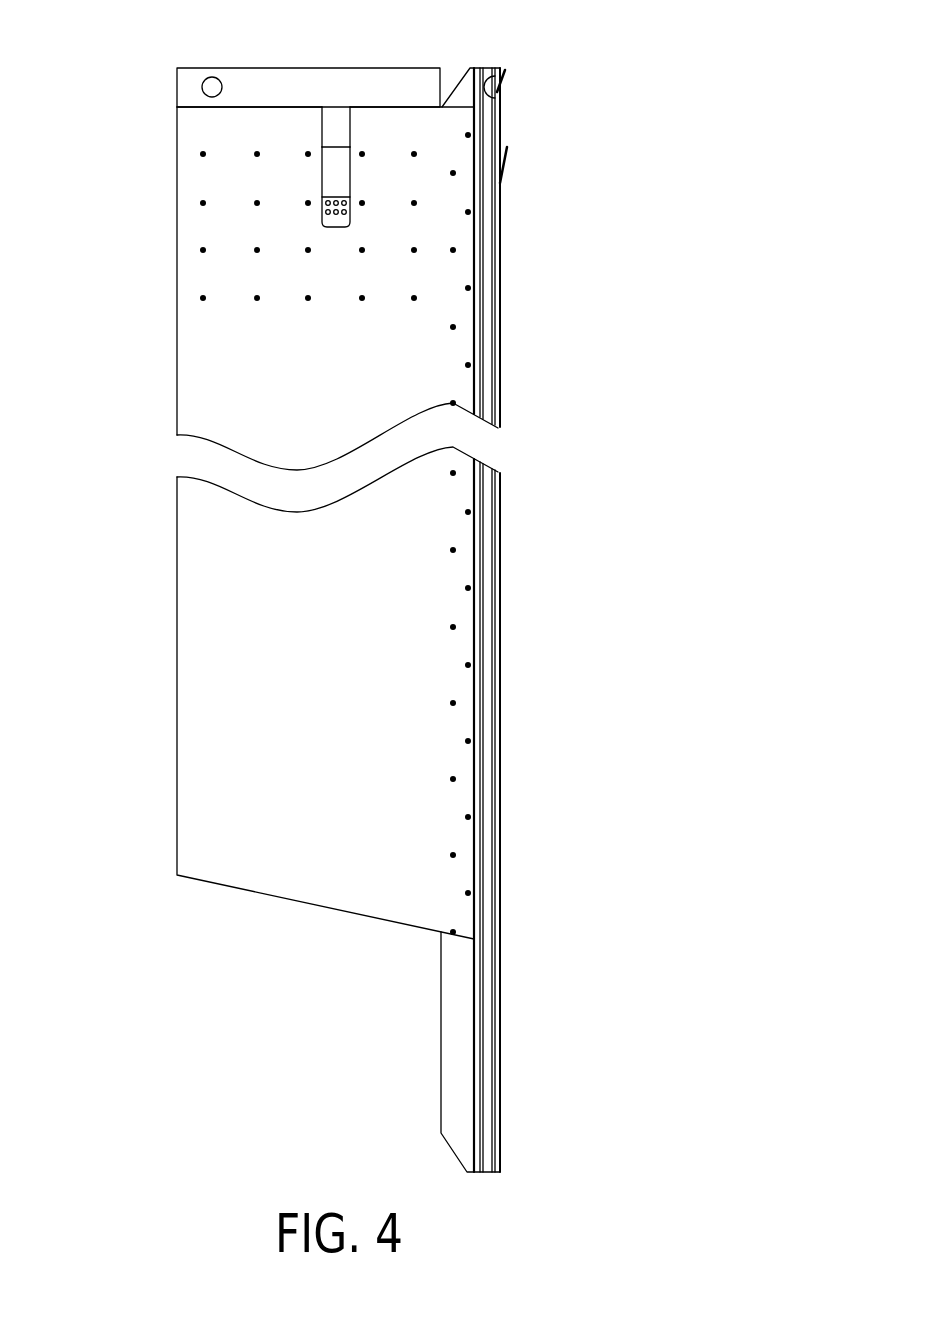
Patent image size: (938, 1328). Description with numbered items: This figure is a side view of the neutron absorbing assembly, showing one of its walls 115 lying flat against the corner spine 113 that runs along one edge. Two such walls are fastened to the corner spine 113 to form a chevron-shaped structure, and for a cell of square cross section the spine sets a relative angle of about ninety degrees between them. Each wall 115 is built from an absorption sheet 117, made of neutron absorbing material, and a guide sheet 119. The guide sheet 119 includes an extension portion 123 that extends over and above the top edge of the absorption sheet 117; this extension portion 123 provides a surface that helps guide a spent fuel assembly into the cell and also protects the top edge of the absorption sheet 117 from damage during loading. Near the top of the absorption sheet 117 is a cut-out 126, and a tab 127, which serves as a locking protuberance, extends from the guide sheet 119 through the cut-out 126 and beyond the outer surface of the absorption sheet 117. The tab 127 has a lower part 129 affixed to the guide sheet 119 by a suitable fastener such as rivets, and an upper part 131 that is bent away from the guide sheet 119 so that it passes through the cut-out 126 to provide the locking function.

The corner spine 113 is at (500, 950).
The wall 115 is at (176, 848).
The absorption sheet 117 is at (213, 792).
The guide sheet 119 is at (352, 67).
The extension portion 123 is at (267, 82).
The cut-out 126 is at (320, 127).
The tab 127 is at (333, 162).
The lower part 129 is at (320, 210).
The upper part 131 is at (337, 143).